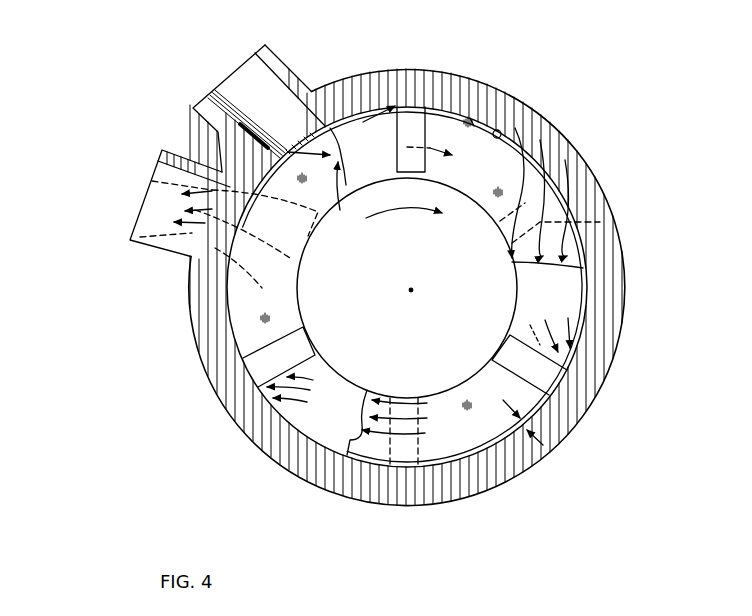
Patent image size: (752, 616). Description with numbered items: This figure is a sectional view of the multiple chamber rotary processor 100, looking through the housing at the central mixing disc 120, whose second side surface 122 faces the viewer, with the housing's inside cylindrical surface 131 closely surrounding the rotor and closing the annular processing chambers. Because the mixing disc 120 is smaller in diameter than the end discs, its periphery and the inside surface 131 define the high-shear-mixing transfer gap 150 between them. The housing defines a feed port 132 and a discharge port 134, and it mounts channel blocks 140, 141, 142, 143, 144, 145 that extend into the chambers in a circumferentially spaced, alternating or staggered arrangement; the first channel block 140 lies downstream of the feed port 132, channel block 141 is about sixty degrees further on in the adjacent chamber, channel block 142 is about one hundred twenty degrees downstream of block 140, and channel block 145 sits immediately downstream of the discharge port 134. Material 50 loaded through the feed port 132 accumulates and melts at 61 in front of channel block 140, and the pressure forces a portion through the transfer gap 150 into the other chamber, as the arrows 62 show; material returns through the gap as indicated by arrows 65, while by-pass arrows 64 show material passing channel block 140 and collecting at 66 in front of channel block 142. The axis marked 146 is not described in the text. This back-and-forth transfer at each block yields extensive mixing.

The material 50 is at (380, 212).
The material accumulated in front of channel block 140 61 is at (352, 156).
The arrows indicating transfer of material 62 is at (353, 128).
The by-pass arrows 64 is at (436, 166).
The arrows indicating return transfer of material 65 is at (523, 158).
The material collected in front of channel block 142 66 is at (552, 298).
The multiple chamber rotary processor 100 is at (617, 109).
The central mixing disc 120 is at (455, 128).
The second side surface 122 is at (485, 145).
The inside cylindrical surface 131 is at (497, 134).
The feed port 132 is at (268, 85).
The discharge port 134 is at (152, 181).
The first channel block 140 is at (412, 120).
The channel block 141 is at (600, 222).
The channel block 142 is at (550, 372).
The channel block 143 is at (392, 452).
The channel block 144 is at (262, 363).
The channel block 145 is at (312, 249).
The rotor axis 146 is at (411, 290).
The high-shear-mixing transfer gap 150 is at (498, 447).